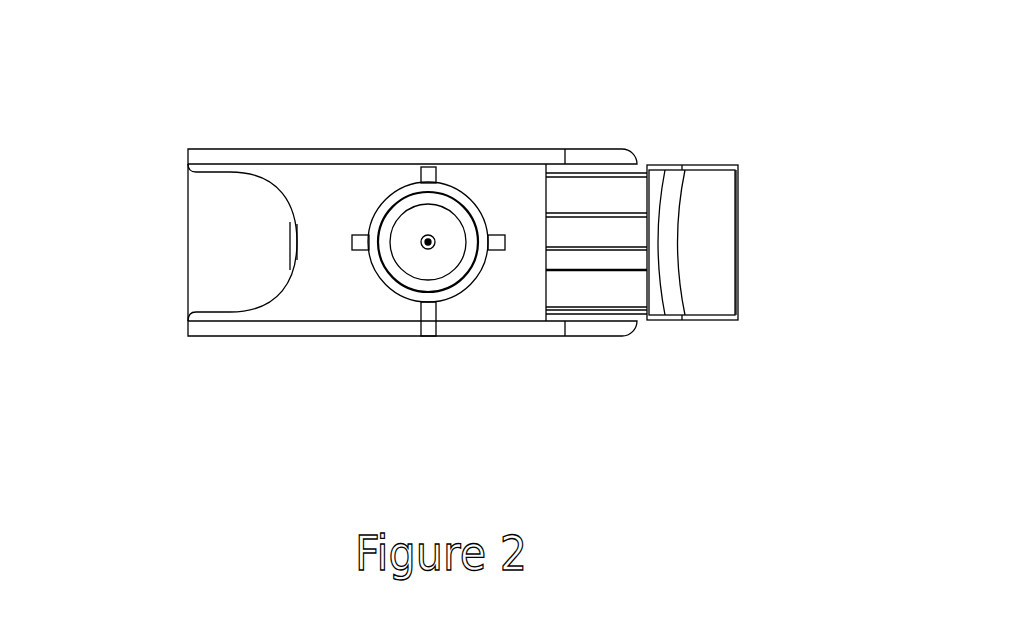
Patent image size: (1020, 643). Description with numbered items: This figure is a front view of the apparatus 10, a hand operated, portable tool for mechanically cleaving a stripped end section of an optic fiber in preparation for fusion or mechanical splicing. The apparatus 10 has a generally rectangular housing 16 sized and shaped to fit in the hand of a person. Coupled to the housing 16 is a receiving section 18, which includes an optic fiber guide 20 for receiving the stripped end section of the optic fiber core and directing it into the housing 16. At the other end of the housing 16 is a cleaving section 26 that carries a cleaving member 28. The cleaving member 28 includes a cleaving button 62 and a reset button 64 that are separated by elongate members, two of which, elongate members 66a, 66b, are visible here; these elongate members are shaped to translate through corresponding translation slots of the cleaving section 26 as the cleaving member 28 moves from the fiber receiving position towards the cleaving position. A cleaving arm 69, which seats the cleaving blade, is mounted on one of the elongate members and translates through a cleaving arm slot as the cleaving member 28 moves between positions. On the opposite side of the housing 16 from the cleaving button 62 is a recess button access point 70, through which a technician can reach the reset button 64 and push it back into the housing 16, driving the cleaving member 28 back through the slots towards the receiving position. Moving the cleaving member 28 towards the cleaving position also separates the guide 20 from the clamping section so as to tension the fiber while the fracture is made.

The apparatus 10 is at (440, 239).
The housing 16 is at (305, 148).
The receiving section 18 is at (380, 292).
The optic fiber guide 20 is at (440, 262).
The cleaving section 26 is at (750, 235).
The cleaving member 28 is at (700, 200).
The cleaving button 62 is at (722, 288).
The reset button 64 is at (292, 243).
The elongate member 66a is at (598, 293).
The elongate member 66b is at (582, 192).
The cleaving arm 69 is at (610, 257).
The recess button access point 70 is at (268, 187).